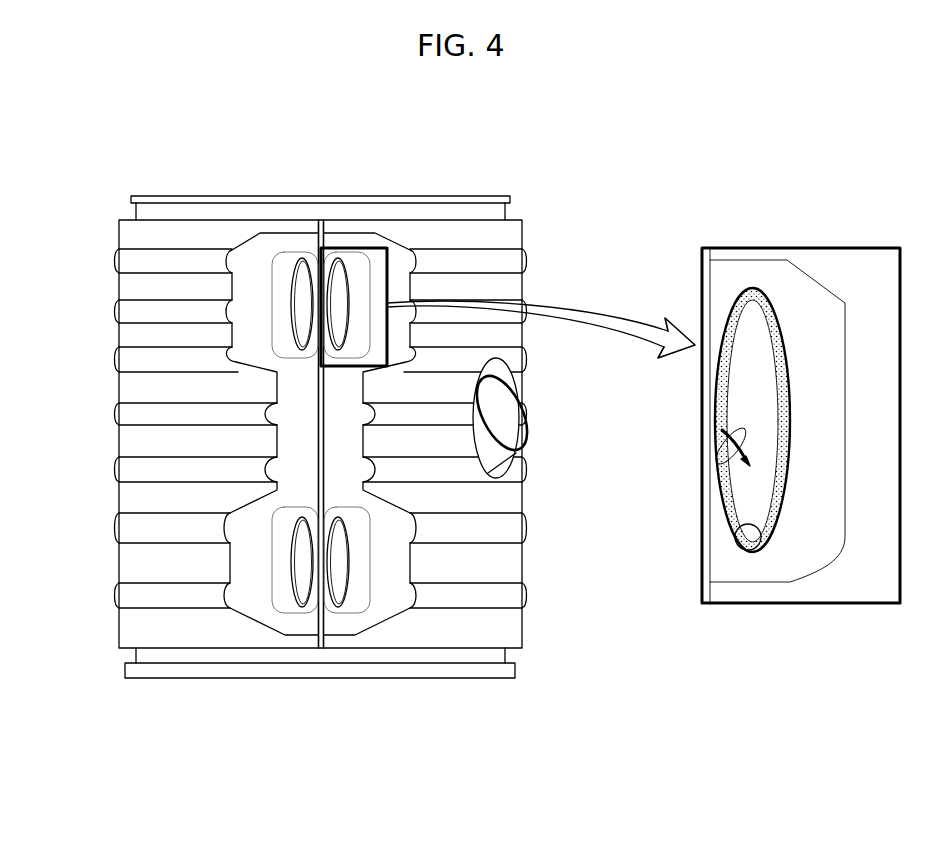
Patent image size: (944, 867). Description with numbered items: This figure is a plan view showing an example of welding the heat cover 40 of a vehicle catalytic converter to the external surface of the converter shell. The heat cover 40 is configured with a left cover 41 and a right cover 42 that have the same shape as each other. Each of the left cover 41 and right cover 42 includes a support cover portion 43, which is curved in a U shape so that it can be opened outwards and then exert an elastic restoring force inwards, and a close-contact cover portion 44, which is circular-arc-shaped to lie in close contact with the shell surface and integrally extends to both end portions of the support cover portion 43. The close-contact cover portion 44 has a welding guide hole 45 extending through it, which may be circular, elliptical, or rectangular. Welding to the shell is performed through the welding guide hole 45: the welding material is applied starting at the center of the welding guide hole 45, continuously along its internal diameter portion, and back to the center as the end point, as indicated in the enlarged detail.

The heat cover 40 is at (337, 124).
The left cover 41 is at (245, 232).
The right cover 42 is at (397, 233).
The support cover portion 43 is at (118, 494).
The close-contact cover portion 44 is at (278, 288).
The welding guide hole 45 is at (293, 335).